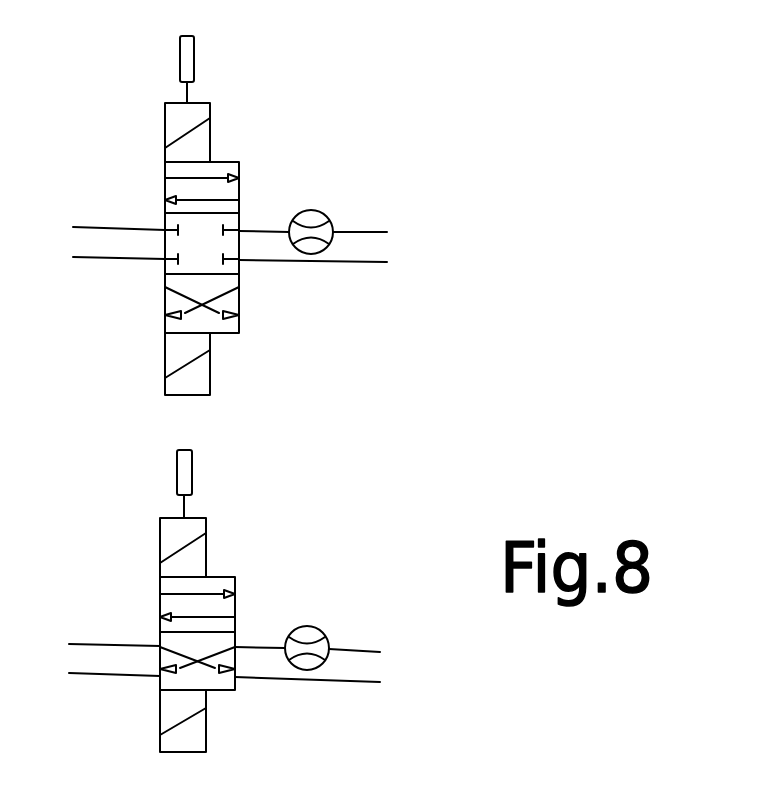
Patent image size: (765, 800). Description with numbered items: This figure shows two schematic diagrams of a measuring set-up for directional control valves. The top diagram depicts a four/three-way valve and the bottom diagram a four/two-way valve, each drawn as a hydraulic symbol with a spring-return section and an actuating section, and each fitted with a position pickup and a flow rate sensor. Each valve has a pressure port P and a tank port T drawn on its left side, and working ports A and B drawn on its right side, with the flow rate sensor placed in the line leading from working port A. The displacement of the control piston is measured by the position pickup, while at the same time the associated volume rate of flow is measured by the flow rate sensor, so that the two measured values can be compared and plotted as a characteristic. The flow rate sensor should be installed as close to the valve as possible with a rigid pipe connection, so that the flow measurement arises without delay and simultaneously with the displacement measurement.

The pressure port P is at (105, 436).
The tank port T is at (106, 467).
The working port A is at (320, 445).
The working port B is at (319, 475).